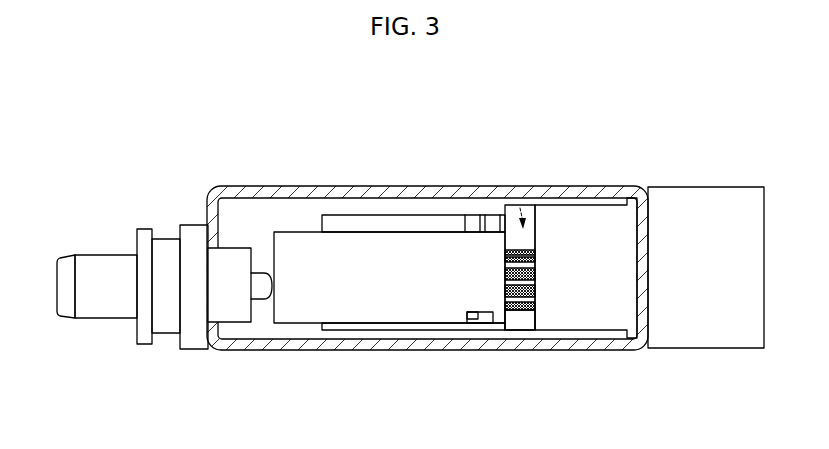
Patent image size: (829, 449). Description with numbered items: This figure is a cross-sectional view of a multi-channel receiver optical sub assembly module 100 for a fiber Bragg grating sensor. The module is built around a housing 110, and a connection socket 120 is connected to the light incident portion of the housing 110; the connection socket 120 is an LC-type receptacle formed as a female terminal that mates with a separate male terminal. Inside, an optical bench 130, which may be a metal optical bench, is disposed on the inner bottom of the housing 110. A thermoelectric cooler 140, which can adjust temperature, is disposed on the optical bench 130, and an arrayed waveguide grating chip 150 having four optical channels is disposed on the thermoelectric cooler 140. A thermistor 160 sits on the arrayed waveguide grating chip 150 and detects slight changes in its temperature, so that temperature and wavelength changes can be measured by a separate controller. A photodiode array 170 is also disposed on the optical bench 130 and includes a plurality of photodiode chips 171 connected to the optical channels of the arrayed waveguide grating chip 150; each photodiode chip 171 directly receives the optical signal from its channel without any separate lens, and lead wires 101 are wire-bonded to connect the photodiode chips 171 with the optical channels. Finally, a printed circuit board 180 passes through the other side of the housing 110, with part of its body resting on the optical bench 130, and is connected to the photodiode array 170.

The multi-channel receiver optical sub assembly module 100 is at (170, 160).
The lead wires 101 is at (540, 331).
The housing 110 is at (274, 186).
The connection socket 120 is at (162, 322).
The optical bench 130 is at (377, 331).
The thermoelectric cooler 140 is at (417, 225).
The arrayed waveguide grating chip 150 is at (302, 240).
The thermistor 160 is at (475, 323).
The photodiode array 170 is at (508, 192).
The photodiode chip 171 is at (527, 311).
The printed circuit board 180 is at (717, 204).